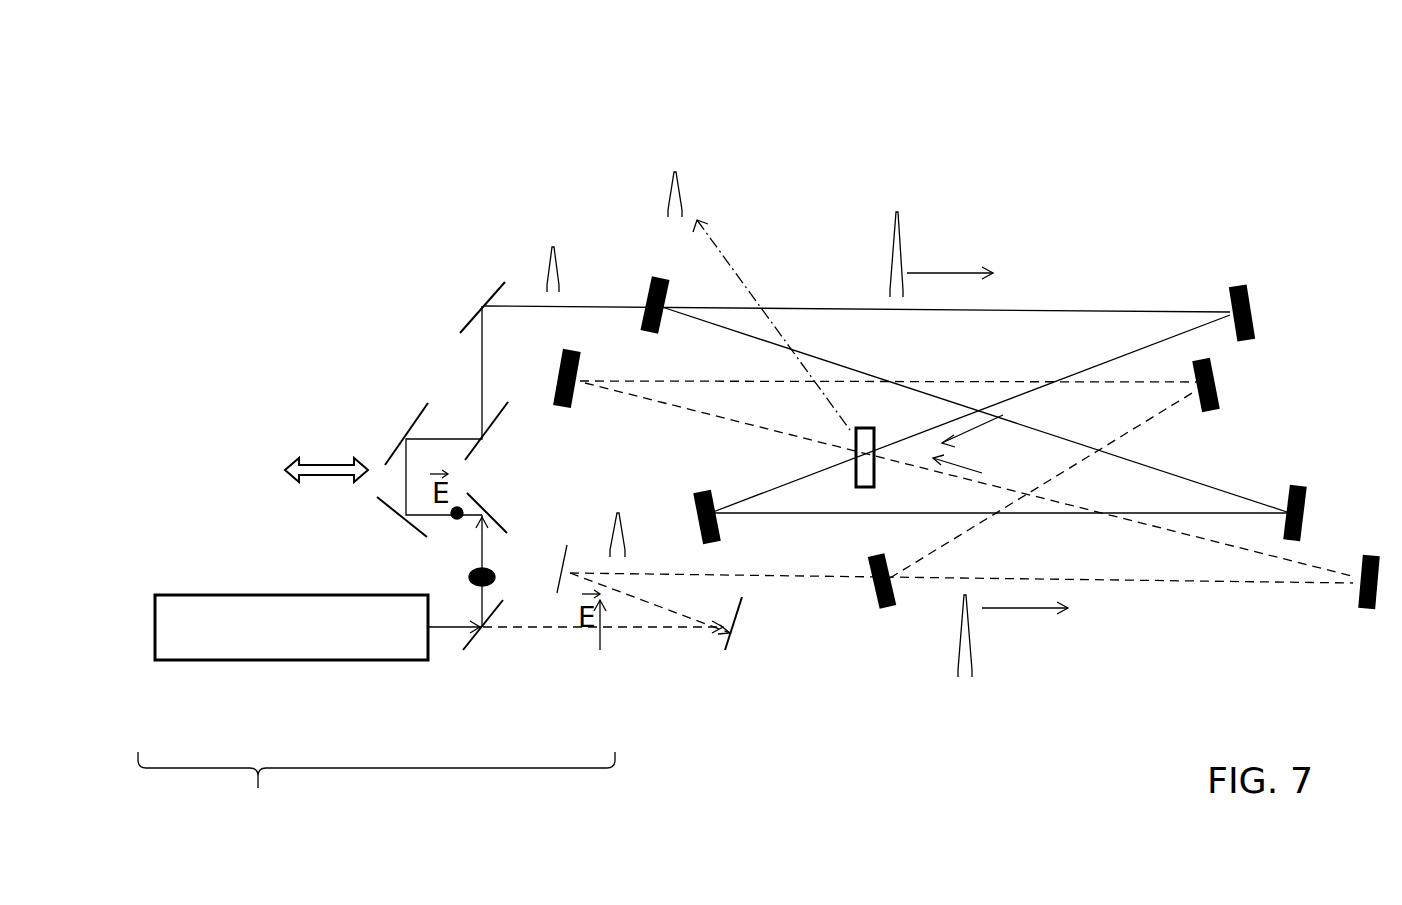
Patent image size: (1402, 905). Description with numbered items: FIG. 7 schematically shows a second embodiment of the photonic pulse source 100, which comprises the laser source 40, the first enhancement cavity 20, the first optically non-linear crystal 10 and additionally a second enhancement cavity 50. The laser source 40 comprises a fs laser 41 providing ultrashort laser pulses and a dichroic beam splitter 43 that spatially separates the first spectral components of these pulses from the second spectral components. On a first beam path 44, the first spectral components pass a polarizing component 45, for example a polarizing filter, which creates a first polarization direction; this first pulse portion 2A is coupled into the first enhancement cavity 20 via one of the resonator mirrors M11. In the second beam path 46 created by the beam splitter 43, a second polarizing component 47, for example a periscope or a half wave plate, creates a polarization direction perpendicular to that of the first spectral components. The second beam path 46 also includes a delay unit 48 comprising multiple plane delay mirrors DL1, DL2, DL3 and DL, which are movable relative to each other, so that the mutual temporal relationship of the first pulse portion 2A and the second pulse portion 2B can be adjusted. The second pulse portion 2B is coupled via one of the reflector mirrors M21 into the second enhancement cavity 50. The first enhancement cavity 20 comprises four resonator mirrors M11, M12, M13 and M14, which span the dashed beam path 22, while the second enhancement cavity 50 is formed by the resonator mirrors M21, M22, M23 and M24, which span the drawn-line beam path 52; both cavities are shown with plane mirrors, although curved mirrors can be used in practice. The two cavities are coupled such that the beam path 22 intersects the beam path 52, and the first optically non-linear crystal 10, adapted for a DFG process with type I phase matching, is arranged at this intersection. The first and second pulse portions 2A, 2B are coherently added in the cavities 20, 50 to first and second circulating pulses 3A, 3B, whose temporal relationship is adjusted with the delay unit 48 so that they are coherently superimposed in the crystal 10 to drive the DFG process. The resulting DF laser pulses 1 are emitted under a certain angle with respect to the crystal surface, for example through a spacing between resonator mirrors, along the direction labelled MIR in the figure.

The photonic pulse source 100 is at (387, 192).
The DF laser pulses 1 is at (685, 186).
The first pulse portion 2A is at (635, 540).
The second pulse portion 2B is at (547, 280).
The first circulating pulse 3A is at (890, 267).
The second circulating pulse 3B is at (968, 630).
The first optically non-linear crystal 10 is at (888, 443).
The first enhancement cavity 20 is at (1066, 566).
The beam path 22 is at (1137, 585).
The laser source 40 is at (272, 829).
The fs laser 41 is at (300, 643).
The dichroic beam splitter 43 is at (463, 660).
The first beam path 44 is at (573, 630).
The polarizing component 45 is at (598, 650).
The second beam path 46 is at (483, 333).
The second polarizing component 47 is at (497, 573).
The delay unit 48 is at (385, 477).
The second enhancement cavity 50 is at (968, 369).
The beam path 52 is at (1120, 313).
The resonator mirror M11 is at (869, 593).
The resonator mirror M12 is at (1339, 597).
The resonator mirror M13 is at (593, 368).
The resonator mirror M14 is at (1236, 383).
The reflector mirror M21 is at (636, 283).
The resonator mirror M22 is at (1275, 303).
The resonator mirror M23 is at (674, 502).
The resonator mirror M24 is at (1327, 506).
The mid-infrared output beam MIR is at (771, 316).
The delay line mirror DL is at (505, 431).
The plane delay mirror DL1 is at (510, 515).
The plane delay mirror DL2 is at (385, 532).
The plane delay mirror DL3 is at (380, 423).